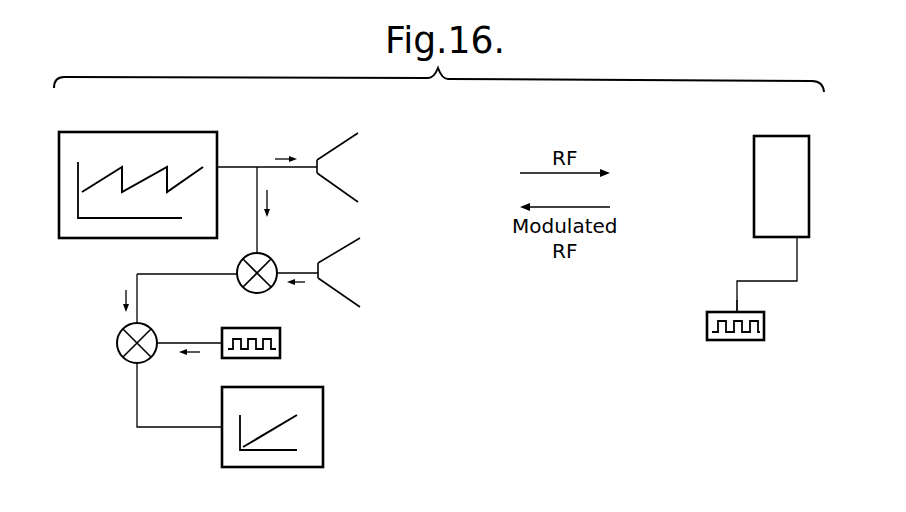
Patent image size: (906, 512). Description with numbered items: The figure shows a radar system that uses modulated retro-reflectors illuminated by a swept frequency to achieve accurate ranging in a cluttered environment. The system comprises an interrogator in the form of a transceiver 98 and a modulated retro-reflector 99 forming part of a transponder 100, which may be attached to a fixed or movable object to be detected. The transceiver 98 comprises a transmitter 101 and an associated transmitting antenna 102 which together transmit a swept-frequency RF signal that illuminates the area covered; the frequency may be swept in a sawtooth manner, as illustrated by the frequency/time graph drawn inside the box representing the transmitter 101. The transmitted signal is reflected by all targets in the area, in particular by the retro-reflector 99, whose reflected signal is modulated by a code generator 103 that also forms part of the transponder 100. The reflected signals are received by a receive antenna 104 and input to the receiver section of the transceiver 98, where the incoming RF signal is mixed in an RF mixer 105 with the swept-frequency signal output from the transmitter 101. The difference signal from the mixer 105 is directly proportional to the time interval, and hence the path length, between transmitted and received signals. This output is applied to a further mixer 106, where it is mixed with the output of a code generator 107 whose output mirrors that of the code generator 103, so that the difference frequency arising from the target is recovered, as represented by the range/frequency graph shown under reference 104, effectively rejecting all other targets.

The transceiver 98 is at (89, 306).
The modulated retro-reflector 99 is at (752, 178).
The transponder 100 is at (754, 360).
The transmitter 101 is at (135, 145).
The transmitting antenna 102 is at (328, 150).
The code generator 103 is at (764, 323).
The receive antenna 104 is at (342, 302).
The RF mixer 105 is at (260, 287).
The further mixer 106 is at (130, 358).
The code generator 107 is at (280, 342).